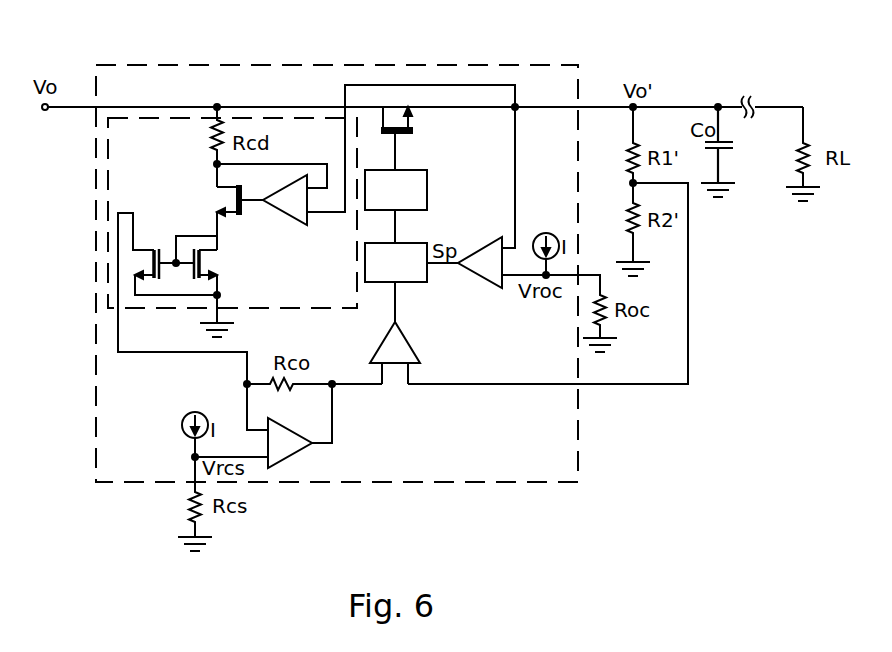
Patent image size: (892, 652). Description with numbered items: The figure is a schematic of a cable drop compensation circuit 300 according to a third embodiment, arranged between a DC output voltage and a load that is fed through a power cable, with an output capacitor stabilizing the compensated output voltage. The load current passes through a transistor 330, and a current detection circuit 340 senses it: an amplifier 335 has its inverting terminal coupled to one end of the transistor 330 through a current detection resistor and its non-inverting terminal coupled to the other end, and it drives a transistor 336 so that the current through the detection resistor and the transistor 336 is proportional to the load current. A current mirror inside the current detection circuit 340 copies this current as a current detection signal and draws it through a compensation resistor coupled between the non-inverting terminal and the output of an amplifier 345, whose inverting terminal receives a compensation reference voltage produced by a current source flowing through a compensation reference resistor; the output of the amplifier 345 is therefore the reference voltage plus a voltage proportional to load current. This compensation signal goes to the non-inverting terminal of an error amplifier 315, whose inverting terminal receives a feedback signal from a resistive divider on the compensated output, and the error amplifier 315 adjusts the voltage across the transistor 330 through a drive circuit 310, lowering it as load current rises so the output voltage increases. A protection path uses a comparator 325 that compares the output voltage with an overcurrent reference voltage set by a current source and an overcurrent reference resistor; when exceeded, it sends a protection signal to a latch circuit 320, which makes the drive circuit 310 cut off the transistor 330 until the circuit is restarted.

The cable drop compensation circuit 300 is at (440, 65).
The drive circuit 310 is at (410, 201).
The error amplifier 315 is at (411, 345).
The latch circuit 320 is at (410, 274).
The comparator 325 is at (478, 277).
The transistor 330 is at (418, 138).
The amplifier 335 is at (285, 210).
The transistor 336 is at (240, 214).
The current detection circuit 340 is at (290, 308).
The amplifier 345 is at (295, 452).